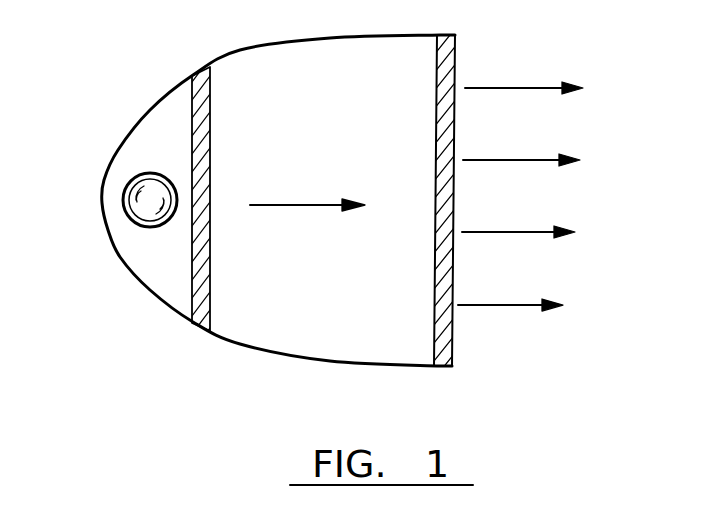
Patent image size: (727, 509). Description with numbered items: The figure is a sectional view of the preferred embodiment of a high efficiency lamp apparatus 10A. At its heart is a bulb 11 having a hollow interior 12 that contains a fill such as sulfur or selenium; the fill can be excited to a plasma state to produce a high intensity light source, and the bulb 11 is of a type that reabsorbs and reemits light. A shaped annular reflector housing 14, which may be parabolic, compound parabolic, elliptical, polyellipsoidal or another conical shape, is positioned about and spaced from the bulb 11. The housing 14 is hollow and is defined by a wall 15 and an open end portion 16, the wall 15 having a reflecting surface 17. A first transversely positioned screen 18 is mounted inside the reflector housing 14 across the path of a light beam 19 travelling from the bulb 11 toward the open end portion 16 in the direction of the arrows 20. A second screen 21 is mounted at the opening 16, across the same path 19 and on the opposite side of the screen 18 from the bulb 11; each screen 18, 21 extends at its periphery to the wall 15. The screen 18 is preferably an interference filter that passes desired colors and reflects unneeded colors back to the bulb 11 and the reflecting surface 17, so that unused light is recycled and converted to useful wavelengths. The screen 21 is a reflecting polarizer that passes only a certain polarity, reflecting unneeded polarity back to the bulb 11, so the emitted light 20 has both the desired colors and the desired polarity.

The high efficiency lamp apparatus 10A is at (355, 24).
The bulb 11 is at (148, 228).
The hollow interior 12 is at (147, 200).
The reflector housing 14 is at (140, 118).
The wall 15 is at (130, 136).
The open end portion 16 is at (392, 97).
The reflecting surface 17 is at (178, 106).
The first screen 18 is at (212, 302).
The light beam 19 is at (312, 207).
The arrows 20 is at (530, 87).
The second screen 21 is at (452, 352).